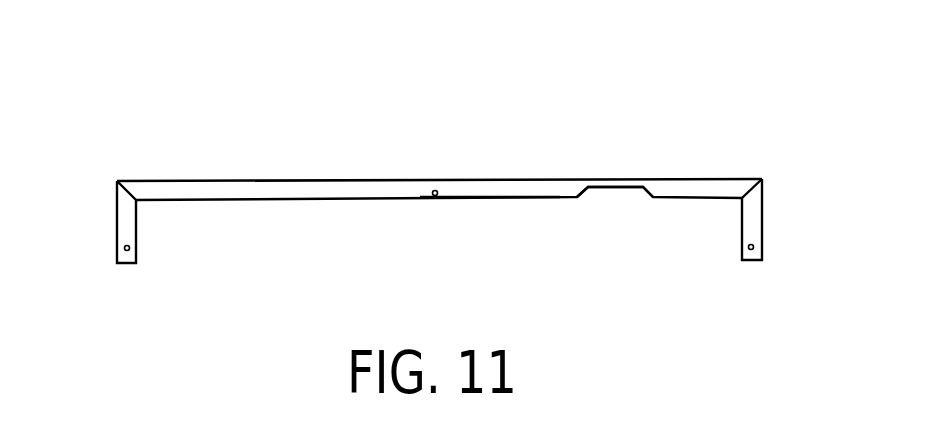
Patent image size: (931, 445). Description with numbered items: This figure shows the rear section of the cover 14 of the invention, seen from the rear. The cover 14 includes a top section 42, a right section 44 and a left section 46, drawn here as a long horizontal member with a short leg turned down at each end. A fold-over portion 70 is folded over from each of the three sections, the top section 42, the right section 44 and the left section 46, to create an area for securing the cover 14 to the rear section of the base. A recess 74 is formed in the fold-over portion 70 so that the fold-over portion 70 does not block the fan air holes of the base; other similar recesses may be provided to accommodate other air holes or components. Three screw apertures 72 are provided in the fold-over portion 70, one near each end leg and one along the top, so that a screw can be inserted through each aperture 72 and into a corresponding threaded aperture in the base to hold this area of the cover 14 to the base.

The cover 14 is at (580, 153).
The top section 42 is at (266, 180).
The right section 44 is at (117, 222).
The left section 46 is at (762, 216).
The fold-over portion 70 is at (523, 189).
The screw apertures 72 is at (137, 246).
The recess 74 is at (648, 198).